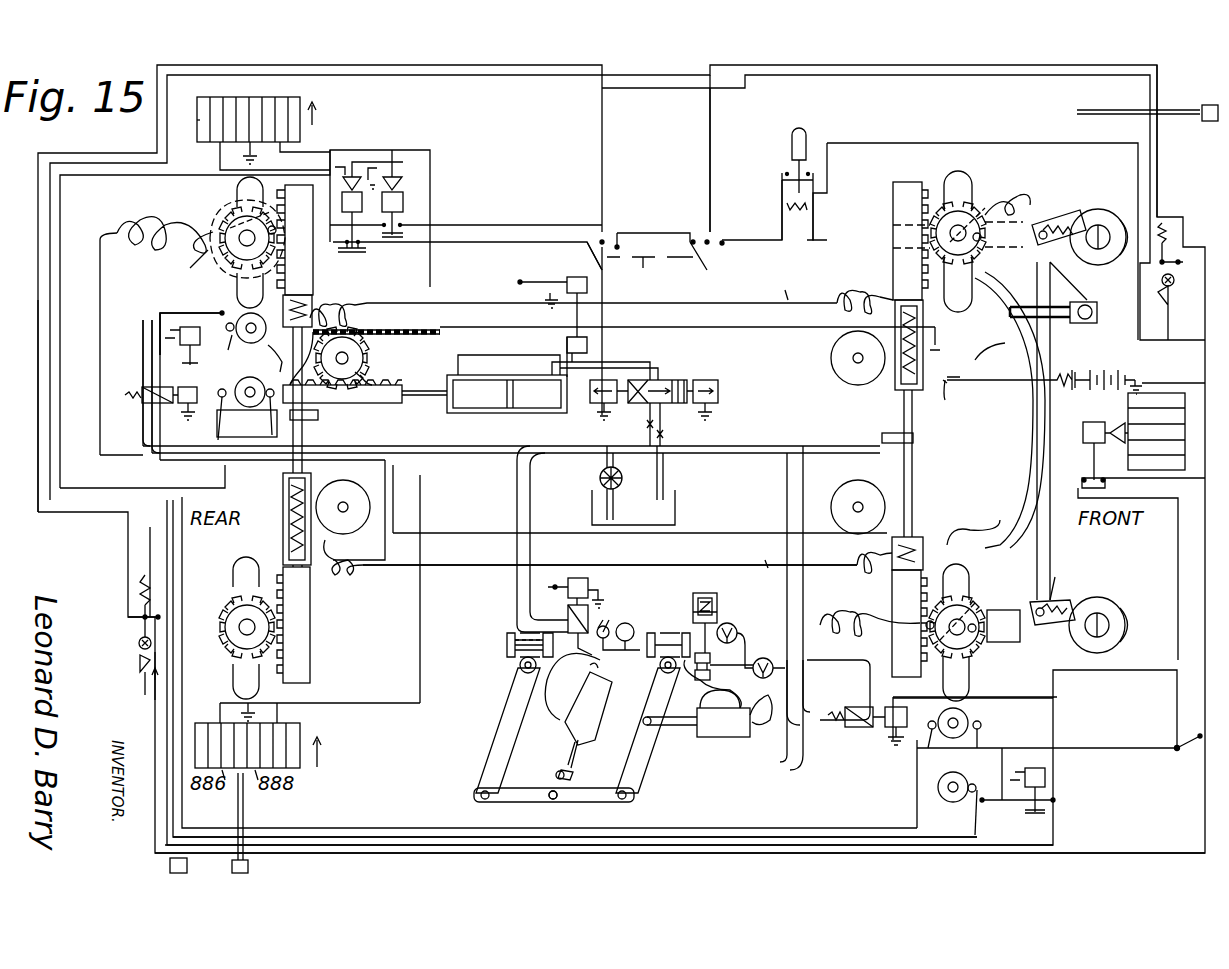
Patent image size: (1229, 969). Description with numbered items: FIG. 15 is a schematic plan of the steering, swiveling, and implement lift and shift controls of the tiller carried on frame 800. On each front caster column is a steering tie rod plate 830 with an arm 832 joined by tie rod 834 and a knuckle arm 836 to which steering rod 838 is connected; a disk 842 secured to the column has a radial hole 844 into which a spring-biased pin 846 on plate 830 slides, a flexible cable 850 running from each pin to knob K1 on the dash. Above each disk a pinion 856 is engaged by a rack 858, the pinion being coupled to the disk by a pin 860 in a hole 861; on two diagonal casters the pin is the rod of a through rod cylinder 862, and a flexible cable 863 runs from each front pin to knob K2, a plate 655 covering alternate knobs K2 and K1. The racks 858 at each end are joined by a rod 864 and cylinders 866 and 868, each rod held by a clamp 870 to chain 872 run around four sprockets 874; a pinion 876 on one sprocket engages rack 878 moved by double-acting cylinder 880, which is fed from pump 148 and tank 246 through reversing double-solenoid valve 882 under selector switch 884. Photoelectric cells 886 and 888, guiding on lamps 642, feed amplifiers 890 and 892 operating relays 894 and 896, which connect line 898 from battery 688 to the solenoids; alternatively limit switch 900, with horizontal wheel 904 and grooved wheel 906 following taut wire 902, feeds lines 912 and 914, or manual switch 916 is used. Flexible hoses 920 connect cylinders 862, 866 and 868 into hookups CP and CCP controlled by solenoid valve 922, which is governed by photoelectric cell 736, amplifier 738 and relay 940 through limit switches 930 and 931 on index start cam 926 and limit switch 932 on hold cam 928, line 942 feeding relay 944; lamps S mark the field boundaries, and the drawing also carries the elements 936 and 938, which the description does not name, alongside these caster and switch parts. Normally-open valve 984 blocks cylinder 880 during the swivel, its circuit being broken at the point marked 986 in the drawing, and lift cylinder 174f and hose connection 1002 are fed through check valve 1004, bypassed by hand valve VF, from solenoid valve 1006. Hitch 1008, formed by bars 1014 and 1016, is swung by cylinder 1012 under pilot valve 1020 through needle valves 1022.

The pump 148 is at (600, 478).
The lift cylinder 174f is at (565, 745).
The tank 246 is at (592, 508).
The lamp 642 is at (250, 868).
The plate 655 is at (950, 397).
The battery 688 is at (1110, 370).
The photoelectric cell 736 is at (1128, 413).
The amplifier 738 is at (1118, 443).
The frame 800 is at (507, 648).
The steering tie rod plate 830 is at (1080, 212).
The arm 832 is at (1095, 300).
The tie rod 834 is at (1050, 552).
The knuckle arm 836 is at (1095, 313).
The steering rod 838 is at (1060, 322).
The disk 842 is at (1105, 218).
The radial hole 844 is at (1115, 255).
The pin 846 is at (1057, 421).
The flexible cable 850 is at (1005, 348).
The pinion 856 is at (235, 220).
The rack 858 is at (313, 283).
The pin 860 is at (276, 235).
The hole 861 is at (1000, 614).
The through rod cylinder 862 is at (235, 228).
The flexible cable 863 is at (1010, 312).
The rod 864 is at (303, 437).
The cylinder 866 is at (283, 535).
The cylinder 868 is at (935, 532).
The clamp 870 is at (318, 416).
The chain 872 is at (440, 538).
The sprocket 874 is at (370, 350).
The pinion 876 is at (372, 382).
The rack 878 is at (380, 402).
The double-acting cylinder 880 is at (483, 415).
The three-position reversing double-solenoid valve 882 is at (665, 375).
The double-pole three-position selector switch 884 is at (643, 268).
The photoelectric cell 886 is at (213, 145).
The photoelectric cell 888 is at (305, 127).
The amplifier 890 is at (348, 160).
The amplifier 892 is at (420, 155).
The relay 894 is at (340, 252).
The relay 896 is at (382, 248).
The line 898 is at (78, 180).
The double-throw limit switch 900 is at (1188, 233).
The taut wire 902 is at (155, 690).
The horizontal wheel 904 is at (139, 644).
The grooved wheel 906 is at (144, 668).
The line 912 is at (1155, 100).
The line 914 is at (1152, 112).
The manual steering switch 916 is at (808, 132).
The flexible hose 920 is at (358, 310).
The solenoid valve 922 is at (155, 385).
The index start cam 926 is at (245, 380).
The index hold and stop cam 928 is at (968, 770).
The limit switch 930 is at (609, 619).
The limit switch 931 is at (218, 432).
The limit switch 932 is at (972, 805).
The spring 936 is at (1012, 685).
The switch 938 is at (1177, 746).
The relay 940 is at (1088, 445).
The line 942 is at (648, 840).
The relay 944 is at (175, 330).
The normally-open solenoid valve 984 is at (590, 278).
The contact 986 is at (525, 283).
The pressure hose connection 1002 is at (690, 665).
The check valve 1004 is at (589, 630).
The solenoid valve 1006 is at (590, 585).
The hitch 1008 is at (474, 790).
The cylinder 1012 is at (708, 740).
The bar 1014 is at (490, 750).
The bar 1016 is at (555, 802).
The pilot valve 1020 is at (738, 600).
The needle valve 1022 is at (737, 634).
The lamp S is at (160, 866).
The pivot hookup CP is at (770, 287).
The pivot hookup CCP is at (610, 555).
The knob K1 is at (942, 332).
The knob K2 is at (952, 388).
The hand valve VF is at (626, 632).